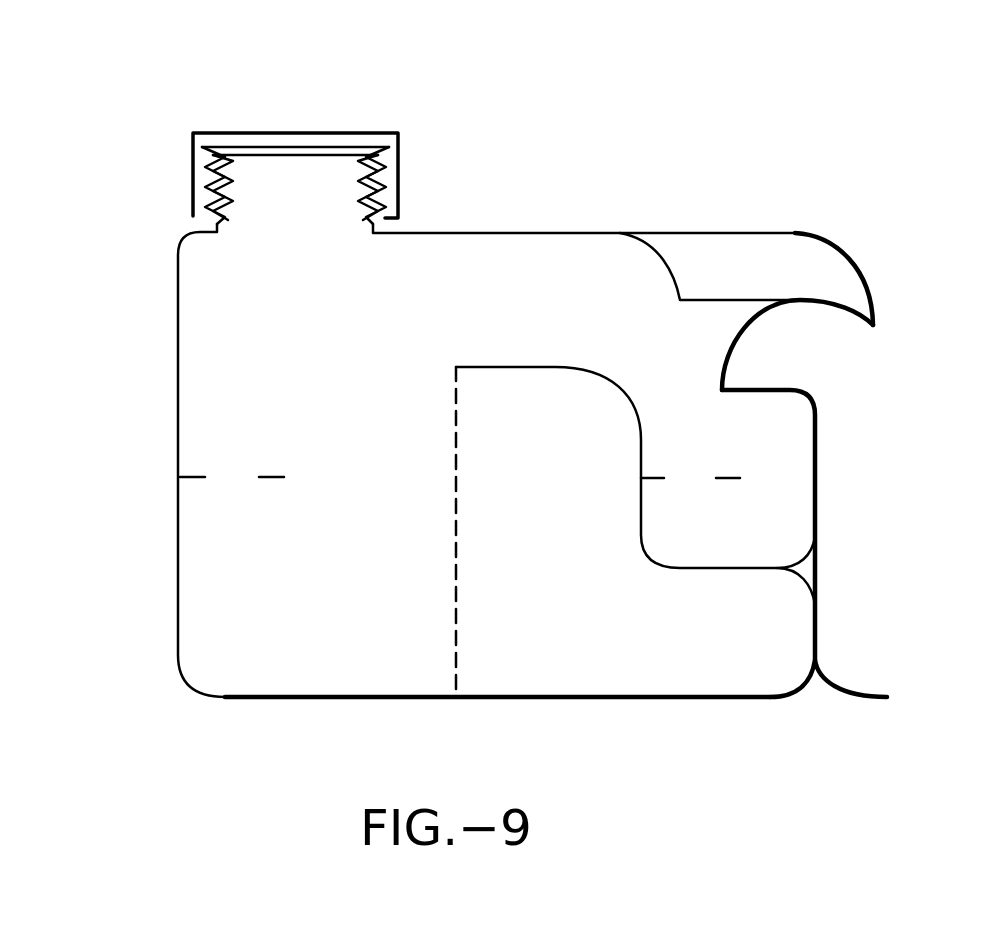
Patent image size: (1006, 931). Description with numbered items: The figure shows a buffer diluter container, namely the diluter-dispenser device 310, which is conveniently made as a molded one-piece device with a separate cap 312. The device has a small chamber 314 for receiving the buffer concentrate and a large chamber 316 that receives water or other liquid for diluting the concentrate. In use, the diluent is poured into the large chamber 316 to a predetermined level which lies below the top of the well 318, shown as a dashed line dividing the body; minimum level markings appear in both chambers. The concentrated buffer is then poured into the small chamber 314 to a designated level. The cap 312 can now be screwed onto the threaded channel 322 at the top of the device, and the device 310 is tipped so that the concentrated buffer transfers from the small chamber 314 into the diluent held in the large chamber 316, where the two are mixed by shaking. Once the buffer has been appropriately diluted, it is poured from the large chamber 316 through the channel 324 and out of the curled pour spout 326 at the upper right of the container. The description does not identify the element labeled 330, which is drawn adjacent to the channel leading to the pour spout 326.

The diluter-dispenser device 310 is at (365, 734).
The cap 312 is at (302, 140).
The small chamber 314 is at (790, 450).
The large chamber 316 is at (222, 561).
The well 318 is at (458, 504).
The threaded channel 322 is at (385, 192).
The channel 324 is at (513, 317).
The pour spout 326 is at (866, 263).
The spout shoulder 330 is at (692, 233).